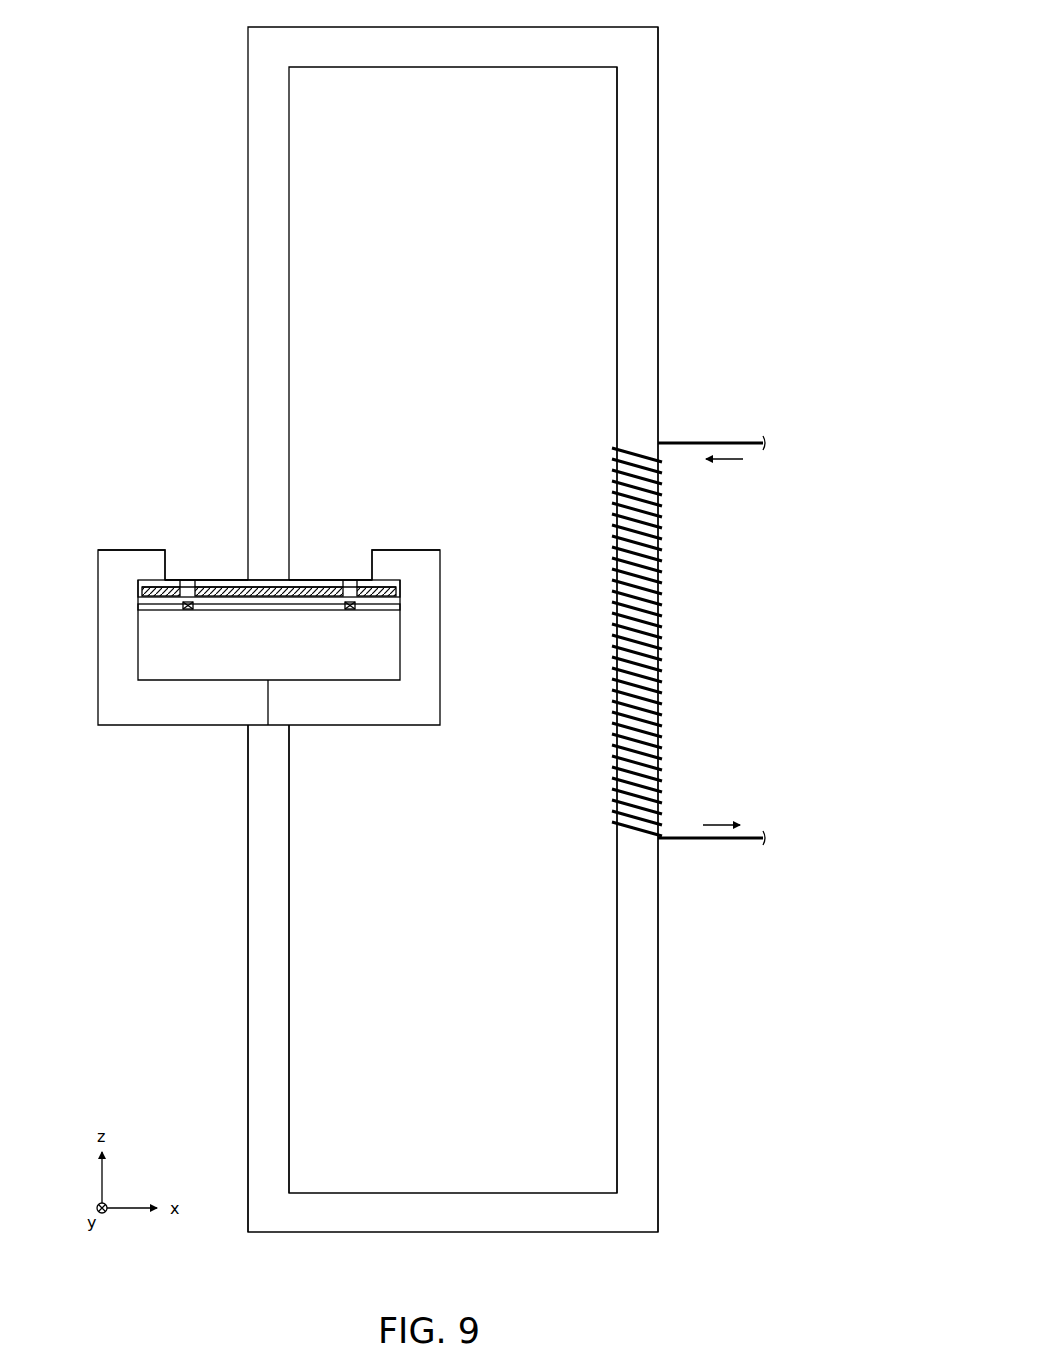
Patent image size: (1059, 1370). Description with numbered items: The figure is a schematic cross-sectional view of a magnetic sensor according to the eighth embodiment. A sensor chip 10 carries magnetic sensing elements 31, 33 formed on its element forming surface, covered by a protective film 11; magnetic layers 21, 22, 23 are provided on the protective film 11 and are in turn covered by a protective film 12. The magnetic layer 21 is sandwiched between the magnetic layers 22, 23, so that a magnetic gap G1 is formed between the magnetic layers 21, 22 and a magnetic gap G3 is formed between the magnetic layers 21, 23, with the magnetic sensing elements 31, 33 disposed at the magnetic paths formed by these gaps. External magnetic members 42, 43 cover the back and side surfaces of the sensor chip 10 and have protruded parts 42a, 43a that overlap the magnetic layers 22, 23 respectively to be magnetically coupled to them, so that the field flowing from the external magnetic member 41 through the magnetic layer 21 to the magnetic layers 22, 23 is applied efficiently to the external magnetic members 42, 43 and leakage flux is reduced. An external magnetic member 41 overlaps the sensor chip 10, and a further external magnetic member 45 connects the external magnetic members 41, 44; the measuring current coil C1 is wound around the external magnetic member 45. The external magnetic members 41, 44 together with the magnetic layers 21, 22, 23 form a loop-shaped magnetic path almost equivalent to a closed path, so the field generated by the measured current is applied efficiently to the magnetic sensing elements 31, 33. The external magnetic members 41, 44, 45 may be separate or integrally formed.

The sensor chip 10 is at (387, 643).
The protective film 11 is at (387, 605).
The protective film 12 is at (387, 585).
The magnetic layer 21 is at (217, 586).
The magnetic layer 22 is at (160, 587).
The magnetic layer 23 is at (375, 586).
The magnetic gap G1 is at (195, 572).
The magnetic gap G3 is at (347, 564).
The magnetic sensing element 31 is at (188, 610).
The magnetic sensing element 33 is at (350, 610).
The external magnetic member 41 is at (262, 247).
The external magnetic member 42 is at (132, 707).
The protruded part 42a is at (115, 557).
The external magnetic member 43 is at (412, 712).
The protruded part 43a is at (417, 558).
The external magnetic member 44 is at (262, 947).
The external magnetic member 45 is at (655, 968).
The measuring current coil C1 is at (662, 618).